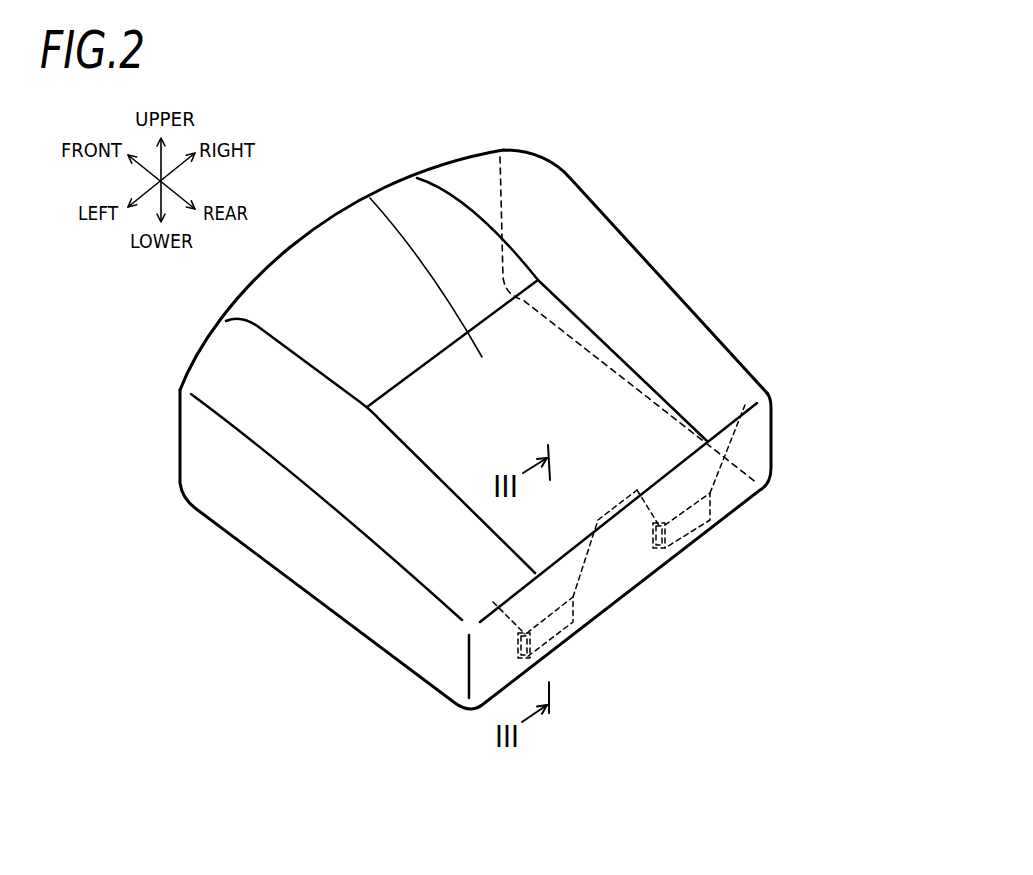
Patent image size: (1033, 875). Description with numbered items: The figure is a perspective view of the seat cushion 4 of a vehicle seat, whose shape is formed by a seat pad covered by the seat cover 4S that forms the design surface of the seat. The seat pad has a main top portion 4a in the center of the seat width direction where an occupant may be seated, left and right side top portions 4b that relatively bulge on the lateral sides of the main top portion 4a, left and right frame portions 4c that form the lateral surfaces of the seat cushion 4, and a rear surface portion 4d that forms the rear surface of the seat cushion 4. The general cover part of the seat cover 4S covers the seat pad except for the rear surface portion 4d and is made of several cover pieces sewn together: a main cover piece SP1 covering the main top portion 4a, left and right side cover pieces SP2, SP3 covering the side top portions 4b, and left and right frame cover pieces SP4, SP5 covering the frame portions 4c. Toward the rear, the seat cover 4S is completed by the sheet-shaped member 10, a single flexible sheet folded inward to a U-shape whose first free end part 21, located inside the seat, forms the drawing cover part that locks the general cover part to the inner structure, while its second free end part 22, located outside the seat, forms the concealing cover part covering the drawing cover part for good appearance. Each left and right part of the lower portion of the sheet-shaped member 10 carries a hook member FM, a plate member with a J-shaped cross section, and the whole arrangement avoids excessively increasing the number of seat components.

The seat cushion 4 is at (698, 182).
The seat cover 4S is at (662, 267).
The main top portion 4a is at (537, 309).
The side top portions 4b is at (431, 414).
The frame portions 4c is at (330, 546).
The rear surface portion 4d is at (618, 512).
The main cover piece SP1 is at (358, 262).
The side cover piece SP2 is at (538, 217).
The side cover piece SP3 is at (250, 375).
The frame cover piece SP4 is at (707, 382).
The frame cover piece SP5 is at (230, 490).
The hook member FM is at (562, 640).
The first free end part 21 is at (757, 483).
The second free end part 22 is at (732, 493).
The sheet-shaped member 10 is at (892, 470).